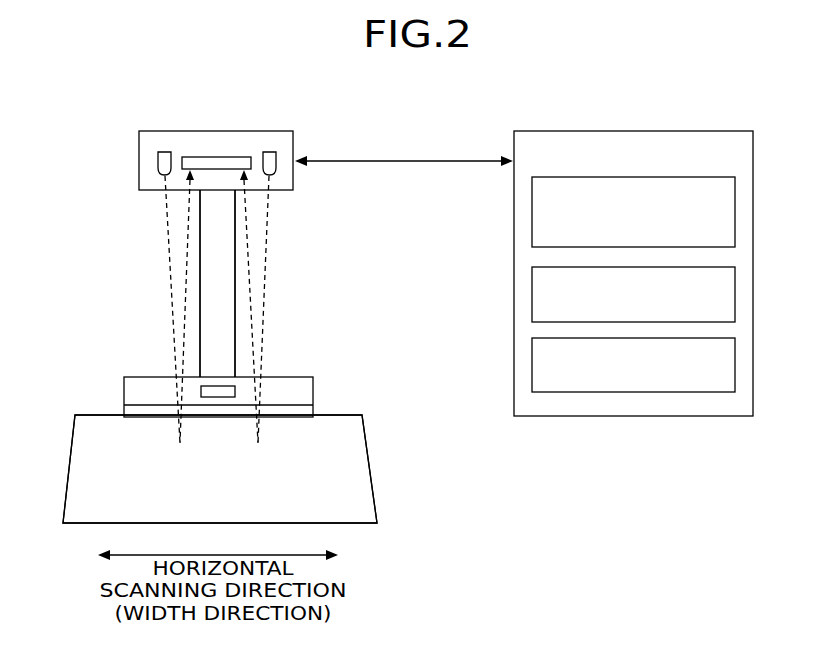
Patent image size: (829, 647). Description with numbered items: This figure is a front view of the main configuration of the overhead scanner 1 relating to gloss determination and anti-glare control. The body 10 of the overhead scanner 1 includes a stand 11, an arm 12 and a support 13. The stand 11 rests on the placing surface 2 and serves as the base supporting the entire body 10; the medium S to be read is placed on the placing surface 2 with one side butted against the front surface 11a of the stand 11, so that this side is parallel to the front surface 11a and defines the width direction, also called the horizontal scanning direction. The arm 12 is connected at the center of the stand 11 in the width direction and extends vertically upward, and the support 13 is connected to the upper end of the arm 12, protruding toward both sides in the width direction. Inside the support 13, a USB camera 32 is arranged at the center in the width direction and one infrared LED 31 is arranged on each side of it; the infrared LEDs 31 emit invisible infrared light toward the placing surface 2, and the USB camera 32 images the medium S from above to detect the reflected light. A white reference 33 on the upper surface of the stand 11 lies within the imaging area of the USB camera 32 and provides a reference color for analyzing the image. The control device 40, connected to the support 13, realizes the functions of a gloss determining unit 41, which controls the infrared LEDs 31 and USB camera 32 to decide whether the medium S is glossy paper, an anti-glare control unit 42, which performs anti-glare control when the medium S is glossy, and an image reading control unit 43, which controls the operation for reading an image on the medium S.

The overhead scanner 1 is at (50, 93).
The placing surface 2 is at (402, 461).
The body 10 is at (194, 268).
The stand 11 is at (297, 388).
The front surface 11a is at (313, 407).
The arm 12 is at (235, 292).
The support 13 is at (294, 184).
The infrared LEDs 31 is at (162, 152).
The USB camera 32 is at (209, 157).
The white reference 33 is at (218, 390).
The control device 40 is at (728, 131).
The gloss determining unit 41 is at (735, 212).
The anti-glare control unit 42 is at (735, 290).
The image reading control unit 43 is at (735, 360).
The medium S is at (75, 470).